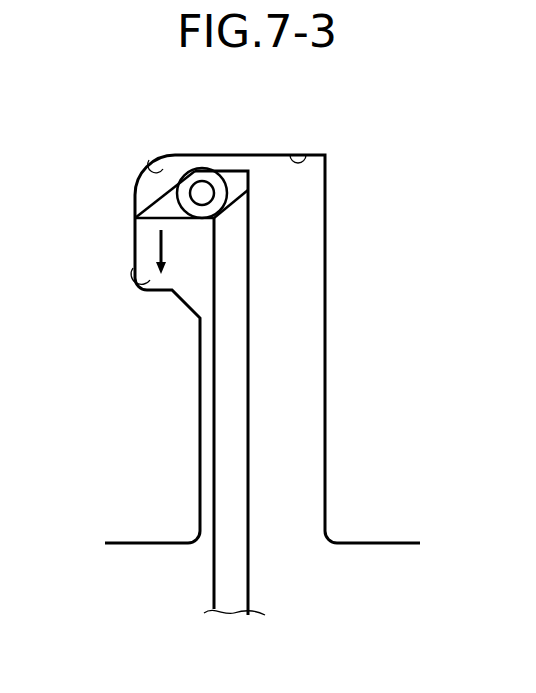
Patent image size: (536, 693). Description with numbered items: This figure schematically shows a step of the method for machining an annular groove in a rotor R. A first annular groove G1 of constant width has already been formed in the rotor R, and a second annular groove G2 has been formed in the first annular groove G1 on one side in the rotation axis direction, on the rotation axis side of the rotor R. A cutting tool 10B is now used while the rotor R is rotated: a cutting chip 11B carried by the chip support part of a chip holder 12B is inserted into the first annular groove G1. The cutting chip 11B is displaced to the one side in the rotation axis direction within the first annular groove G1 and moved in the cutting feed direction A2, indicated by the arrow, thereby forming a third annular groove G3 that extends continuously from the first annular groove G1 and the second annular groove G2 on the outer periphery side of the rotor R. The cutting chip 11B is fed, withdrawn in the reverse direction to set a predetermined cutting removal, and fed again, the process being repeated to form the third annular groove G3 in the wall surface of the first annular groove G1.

The rotor R is at (160, 422).
The cutting tool 10B is at (262, 571).
The chip holder 12B is at (260, 224).
The cutting chip 11B is at (178, 173).
The first annular groove G1 is at (306, 152).
The second annular groove G2 is at (160, 160).
The third annular groove G3 is at (145, 267).
The cutting feed direction A2 is at (160, 238).